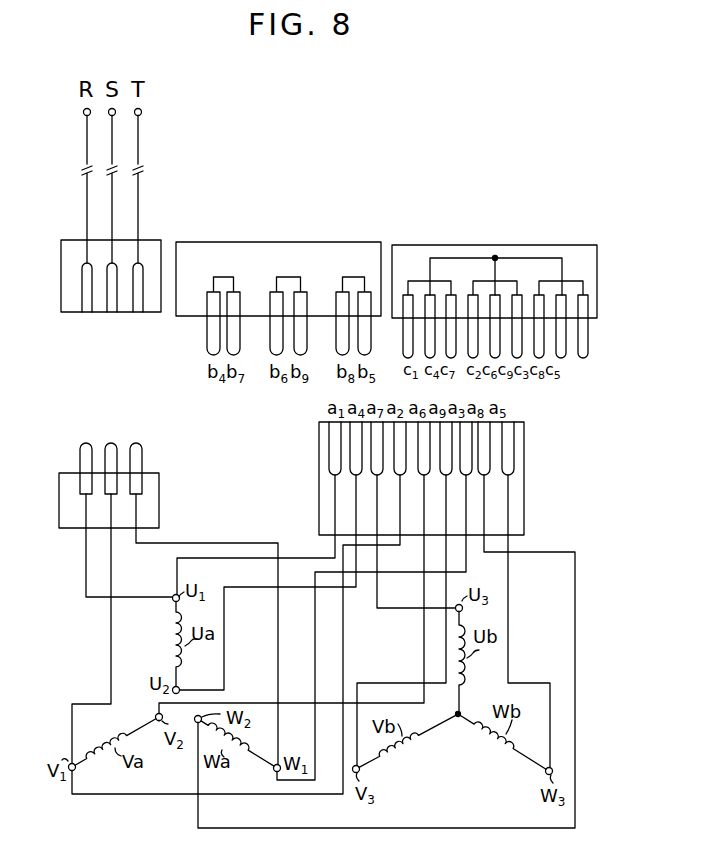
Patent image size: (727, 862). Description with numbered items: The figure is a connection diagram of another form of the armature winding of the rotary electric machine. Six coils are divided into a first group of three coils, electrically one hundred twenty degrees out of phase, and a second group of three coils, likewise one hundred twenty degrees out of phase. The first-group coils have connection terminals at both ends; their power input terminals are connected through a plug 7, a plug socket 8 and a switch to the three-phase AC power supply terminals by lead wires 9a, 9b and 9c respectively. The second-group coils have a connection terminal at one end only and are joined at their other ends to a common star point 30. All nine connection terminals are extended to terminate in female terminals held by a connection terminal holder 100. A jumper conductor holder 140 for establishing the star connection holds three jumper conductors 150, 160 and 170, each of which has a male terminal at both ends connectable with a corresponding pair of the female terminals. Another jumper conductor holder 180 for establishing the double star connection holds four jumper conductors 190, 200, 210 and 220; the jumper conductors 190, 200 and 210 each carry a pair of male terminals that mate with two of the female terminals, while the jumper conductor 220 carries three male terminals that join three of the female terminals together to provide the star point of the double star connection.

The plug 7 is at (67, 491).
The plug socket 8 is at (62, 271).
The lead wire 9a is at (87, 189).
The lead wire 9b is at (112, 208).
The lead wire 9c is at (138, 192).
The star point 30 is at (457, 716).
The connection terminal holder 100 is at (520, 490).
The jumper conductor holder 140 is at (278, 281).
The jumper conductor 150 is at (229, 276).
The jumper conductor 160 is at (294, 276).
The jumper conductor 170 is at (361, 276).
The jumper conductor holder 180 is at (533, 272).
The jumper conductor 190 is at (417, 280).
The jumper conductor 200 is at (508, 281).
The jumper conductor 210 is at (570, 281).
The jumper conductor 220 is at (467, 258).